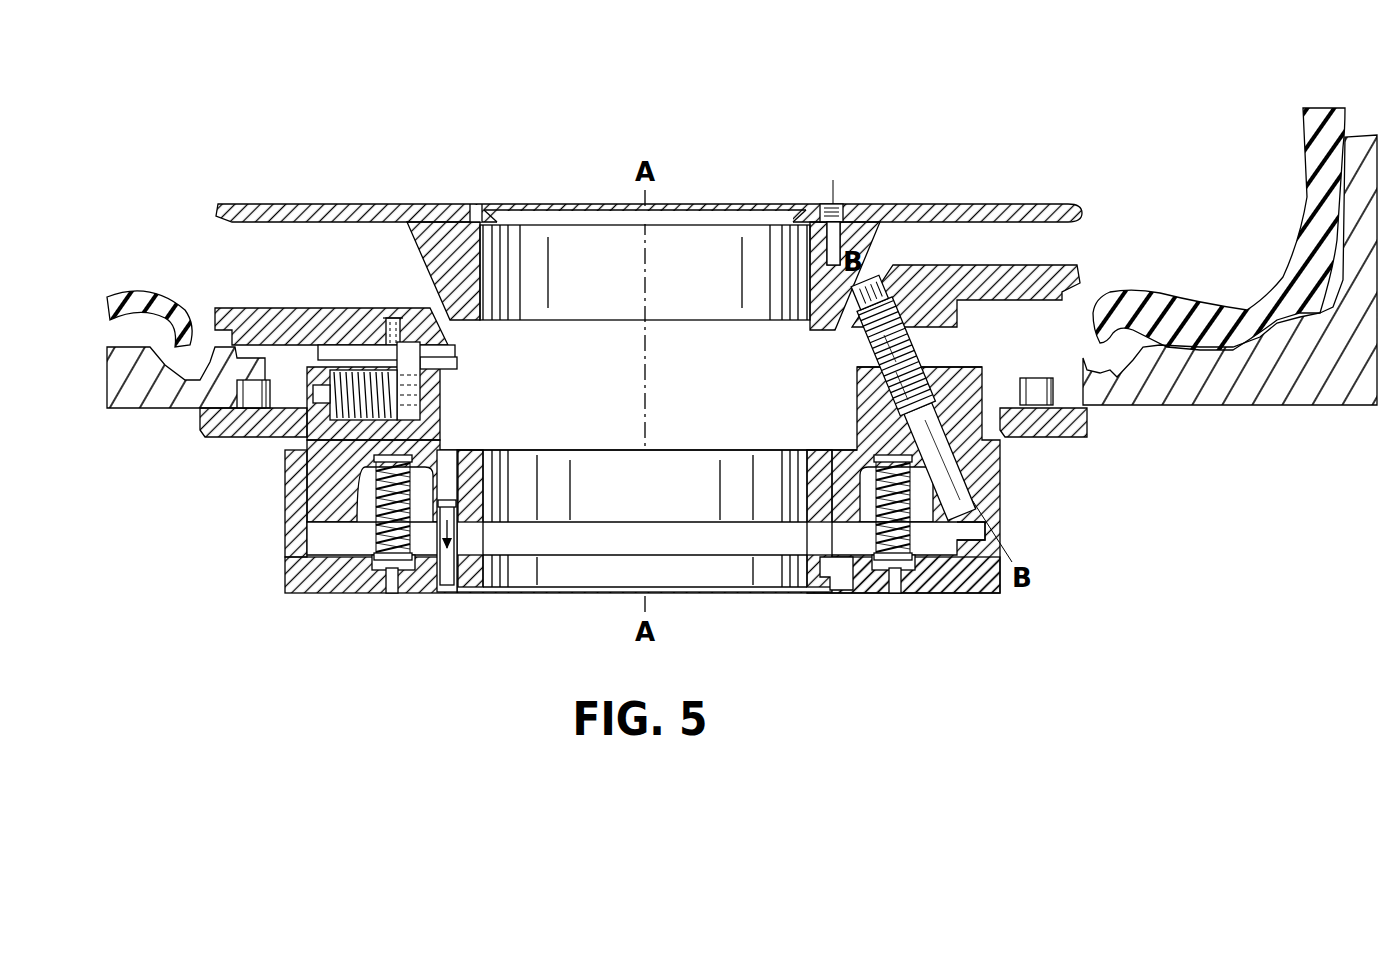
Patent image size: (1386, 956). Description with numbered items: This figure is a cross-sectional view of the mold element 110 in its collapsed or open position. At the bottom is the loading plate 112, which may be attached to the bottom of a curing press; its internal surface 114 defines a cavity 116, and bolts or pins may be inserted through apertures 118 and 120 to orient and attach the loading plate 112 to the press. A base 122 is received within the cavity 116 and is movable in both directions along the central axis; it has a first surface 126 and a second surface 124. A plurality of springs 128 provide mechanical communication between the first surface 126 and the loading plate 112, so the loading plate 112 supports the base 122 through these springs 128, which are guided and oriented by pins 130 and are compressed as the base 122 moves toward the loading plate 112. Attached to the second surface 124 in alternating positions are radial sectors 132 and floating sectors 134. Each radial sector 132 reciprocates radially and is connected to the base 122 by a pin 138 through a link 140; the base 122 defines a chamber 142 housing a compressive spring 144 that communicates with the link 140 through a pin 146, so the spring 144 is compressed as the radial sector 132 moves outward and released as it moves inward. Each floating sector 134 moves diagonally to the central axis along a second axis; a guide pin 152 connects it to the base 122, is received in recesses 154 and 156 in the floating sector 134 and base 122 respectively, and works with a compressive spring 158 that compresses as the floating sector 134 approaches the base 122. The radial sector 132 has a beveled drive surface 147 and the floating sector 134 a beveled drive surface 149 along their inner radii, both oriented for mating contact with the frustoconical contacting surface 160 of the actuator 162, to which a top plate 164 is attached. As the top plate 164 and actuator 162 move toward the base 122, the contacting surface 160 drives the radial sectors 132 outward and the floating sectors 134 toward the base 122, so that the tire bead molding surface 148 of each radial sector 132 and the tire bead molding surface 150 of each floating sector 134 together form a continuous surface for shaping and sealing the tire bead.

The mold element 110 is at (990, 165).
The loading plate 112 is at (1087, 420).
The internal surface 114 is at (315, 547).
The cavity 116 is at (322, 553).
The aperture 118 is at (839, 562).
The aperture 120 is at (450, 578).
The base 122 is at (978, 392).
The second surface 124 is at (975, 368).
The first surface 126 is at (975, 535).
The springs 128 is at (410, 482).
The pins 130 is at (387, 568).
The radial sector 132 is at (277, 308).
The floating sector 134 is at (990, 265).
The pin 138 is at (388, 312).
The link 140 is at (420, 364).
The chamber 142 is at (327, 408).
The compressive spring 144 is at (330, 385).
The pin 146 is at (420, 395).
The drive surface 147 is at (456, 339).
The tire bead molding surface 148 is at (190, 312).
The drive surface 149 is at (828, 325).
The tire bead molding surface 150 is at (1092, 279).
The guide pin 152 is at (928, 410).
The recess 154 is at (899, 310).
The recess 156 is at (884, 386).
The compressive spring 158 is at (886, 348).
The contacting surface 160 is at (424, 277).
The actuator 162 is at (432, 242).
The top plate 164 is at (1072, 206).